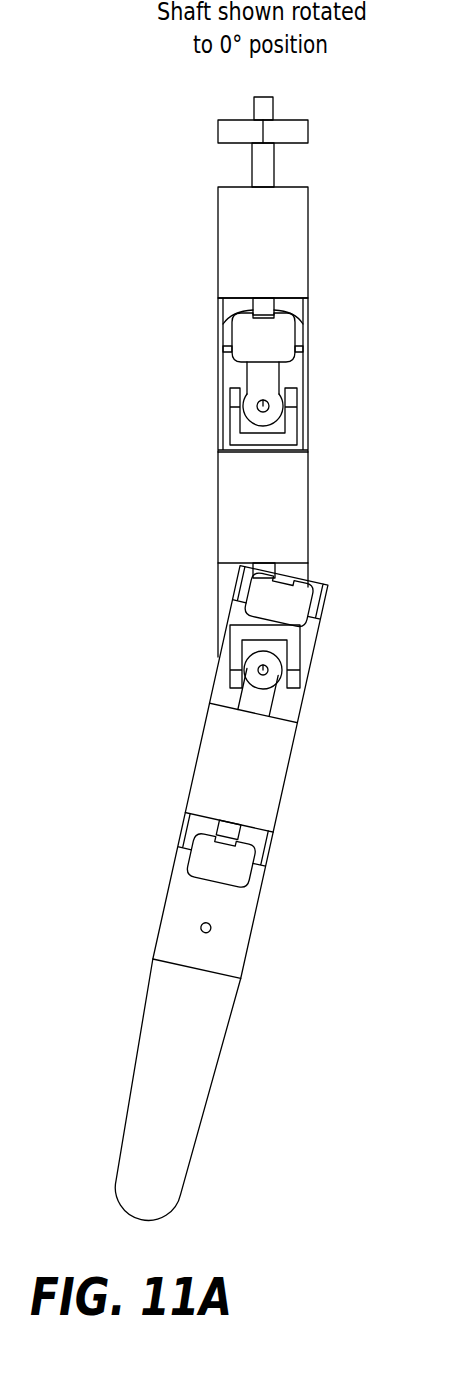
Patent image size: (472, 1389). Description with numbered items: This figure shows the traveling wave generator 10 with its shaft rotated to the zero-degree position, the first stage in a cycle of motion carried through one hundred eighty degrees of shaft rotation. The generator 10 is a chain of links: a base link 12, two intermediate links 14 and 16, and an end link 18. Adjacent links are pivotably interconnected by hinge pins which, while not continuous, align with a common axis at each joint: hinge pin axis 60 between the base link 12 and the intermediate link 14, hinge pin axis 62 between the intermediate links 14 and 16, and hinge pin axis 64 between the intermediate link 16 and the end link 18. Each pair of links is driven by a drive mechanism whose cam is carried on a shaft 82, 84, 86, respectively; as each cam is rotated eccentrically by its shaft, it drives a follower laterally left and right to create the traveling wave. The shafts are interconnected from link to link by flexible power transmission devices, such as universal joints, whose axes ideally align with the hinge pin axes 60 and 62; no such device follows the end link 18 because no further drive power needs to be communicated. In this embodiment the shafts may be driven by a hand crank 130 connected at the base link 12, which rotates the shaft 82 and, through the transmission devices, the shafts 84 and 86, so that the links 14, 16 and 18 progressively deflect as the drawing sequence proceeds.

The traveling wave generator 10 is at (165, 173).
The base link 12 is at (322, 240).
The intermediate link 14 is at (322, 504).
The intermediate link 16 is at (288, 762).
The end link 18 is at (238, 1031).
The hinge pin axis 60 is at (266, 401).
The hinge pin axis 62 is at (264, 674).
The hinge pin axis 64 is at (208, 931).
The shaft 82 is at (272, 163).
The shaft 84 is at (264, 572).
The shaft 86 is at (228, 826).
The hand crank 130 is at (303, 133).